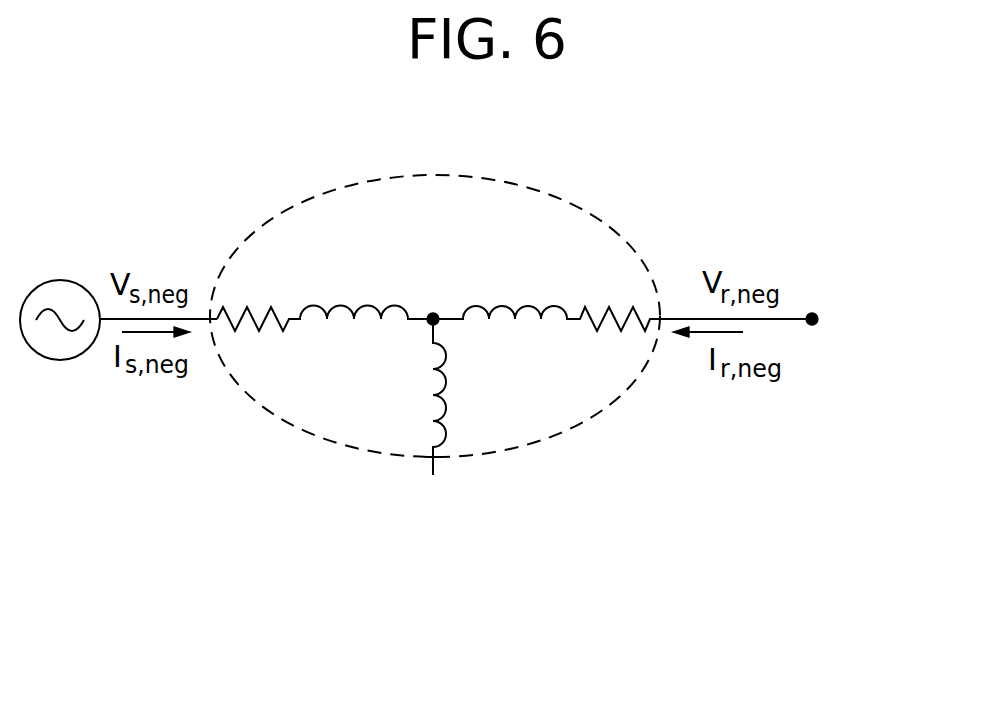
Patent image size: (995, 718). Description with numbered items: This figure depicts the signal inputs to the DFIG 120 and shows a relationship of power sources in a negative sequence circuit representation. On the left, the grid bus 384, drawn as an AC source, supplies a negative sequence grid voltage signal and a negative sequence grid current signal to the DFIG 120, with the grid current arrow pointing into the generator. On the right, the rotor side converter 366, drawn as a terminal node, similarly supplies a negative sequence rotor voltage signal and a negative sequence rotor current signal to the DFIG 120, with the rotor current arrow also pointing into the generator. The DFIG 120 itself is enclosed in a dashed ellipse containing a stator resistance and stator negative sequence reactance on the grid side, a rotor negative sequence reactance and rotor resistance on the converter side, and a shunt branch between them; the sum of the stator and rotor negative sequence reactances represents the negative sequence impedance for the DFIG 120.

The grid bus 384 is at (62, 280).
The DFIG 120 is at (380, 178).
The rotor side converter 366 is at (812, 313).